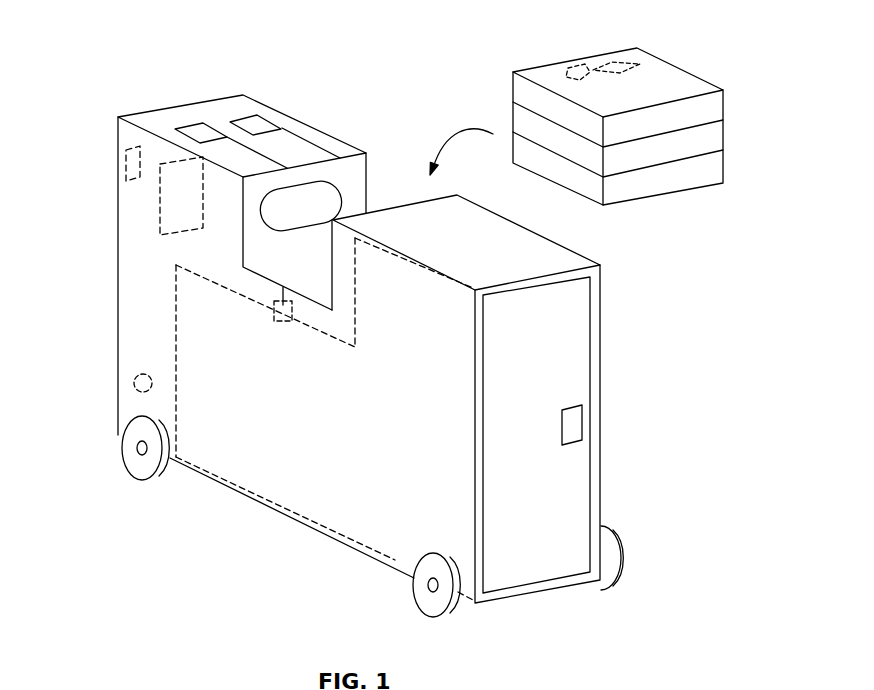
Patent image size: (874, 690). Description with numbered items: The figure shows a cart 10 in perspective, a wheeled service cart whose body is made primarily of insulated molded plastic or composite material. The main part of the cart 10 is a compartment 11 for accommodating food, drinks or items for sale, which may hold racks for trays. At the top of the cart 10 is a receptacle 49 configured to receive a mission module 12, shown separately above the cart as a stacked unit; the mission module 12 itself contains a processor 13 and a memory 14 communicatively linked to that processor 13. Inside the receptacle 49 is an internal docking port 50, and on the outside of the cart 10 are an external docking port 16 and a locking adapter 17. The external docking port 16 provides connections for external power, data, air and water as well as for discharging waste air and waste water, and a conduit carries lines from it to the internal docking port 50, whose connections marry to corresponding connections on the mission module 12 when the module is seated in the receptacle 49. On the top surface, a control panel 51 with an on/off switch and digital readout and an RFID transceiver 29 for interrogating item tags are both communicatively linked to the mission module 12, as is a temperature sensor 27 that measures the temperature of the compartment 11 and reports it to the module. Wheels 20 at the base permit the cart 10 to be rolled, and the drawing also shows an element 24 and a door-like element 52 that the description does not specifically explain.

The cart 10 is at (198, 38).
The compartment 11 is at (176, 345).
The mission module 12 is at (615, 50).
The processor 13 is at (570, 68).
The memory 14 is at (640, 60).
The external docking port 16 is at (160, 210).
The locking adapter 17 is at (127, 162).
The wheels 20 is at (132, 475).
The vent opening 24 is at (133, 388).
The temperature sensor 27 is at (293, 320).
The RFID transceiver 29 is at (243, 118).
The receptacle 49 is at (357, 165).
The internal docking port 50 is at (321, 184).
The control panel 51 is at (187, 125).
The cabinet door unit 52 is at (590, 352).